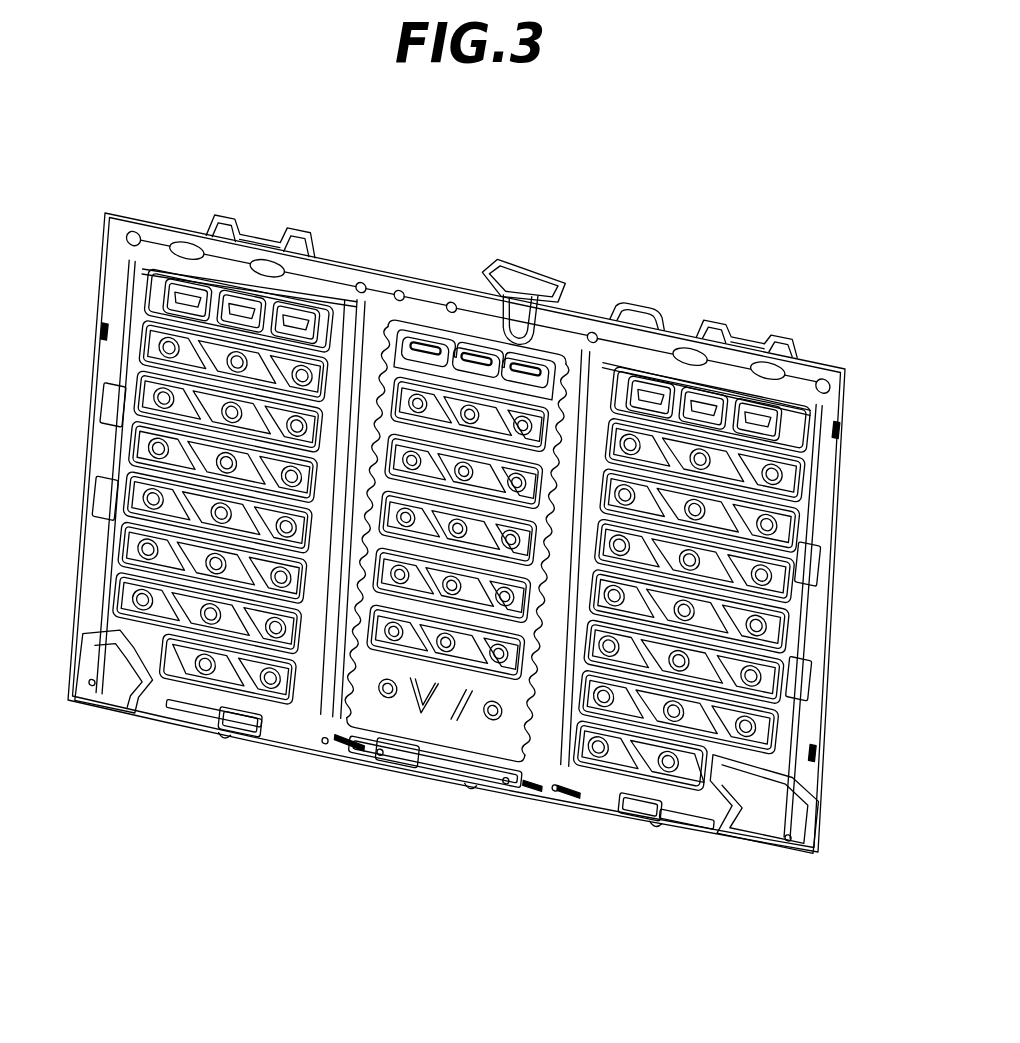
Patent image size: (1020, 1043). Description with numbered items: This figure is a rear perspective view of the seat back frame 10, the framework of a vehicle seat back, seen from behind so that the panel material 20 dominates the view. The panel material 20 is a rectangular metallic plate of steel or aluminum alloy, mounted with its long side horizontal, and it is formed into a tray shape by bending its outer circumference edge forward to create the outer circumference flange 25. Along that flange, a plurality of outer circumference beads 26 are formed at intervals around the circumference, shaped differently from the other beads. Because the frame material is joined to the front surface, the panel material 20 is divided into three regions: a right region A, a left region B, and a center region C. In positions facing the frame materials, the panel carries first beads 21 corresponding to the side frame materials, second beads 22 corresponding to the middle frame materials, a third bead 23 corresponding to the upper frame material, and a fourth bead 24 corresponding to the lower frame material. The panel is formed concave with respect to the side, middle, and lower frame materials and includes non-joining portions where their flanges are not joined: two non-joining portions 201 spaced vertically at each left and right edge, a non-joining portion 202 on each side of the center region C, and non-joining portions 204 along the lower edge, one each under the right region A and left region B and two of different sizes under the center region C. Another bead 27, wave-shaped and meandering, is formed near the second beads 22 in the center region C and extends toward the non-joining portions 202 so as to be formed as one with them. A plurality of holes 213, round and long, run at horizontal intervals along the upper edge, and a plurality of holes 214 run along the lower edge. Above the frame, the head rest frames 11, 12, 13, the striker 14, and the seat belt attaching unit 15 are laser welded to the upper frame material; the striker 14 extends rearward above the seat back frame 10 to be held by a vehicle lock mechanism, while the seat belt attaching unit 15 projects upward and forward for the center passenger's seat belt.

The seat back frame 10 is at (370, 183).
The head rest frame 11 is at (717, 324).
The head rest frame 12 is at (224, 218).
The head rest frame 13 is at (539, 300).
The striker 14 is at (503, 262).
The seat belt attaching unit 15 is at (640, 305).
The panel material 20 is at (355, 778).
The first bead 21 is at (803, 616).
The second bead 22 is at (345, 297).
The third bead 23 is at (270, 262).
The fourth bead 24 is at (204, 713).
The outer circumference flange 25 is at (840, 478).
The outer circumference bead 26 is at (401, 291).
The another bead 27 is at (361, 300).
The non-joining portion 201 is at (813, 565).
The non-joining portion 202 is at (243, 726).
The non-joining portion 204 is at (222, 740).
The hole 213 is at (127, 233).
The hole 214 is at (90, 687).
The right region A is at (815, 342).
The left region B is at (165, 212).
The center region C is at (513, 252).